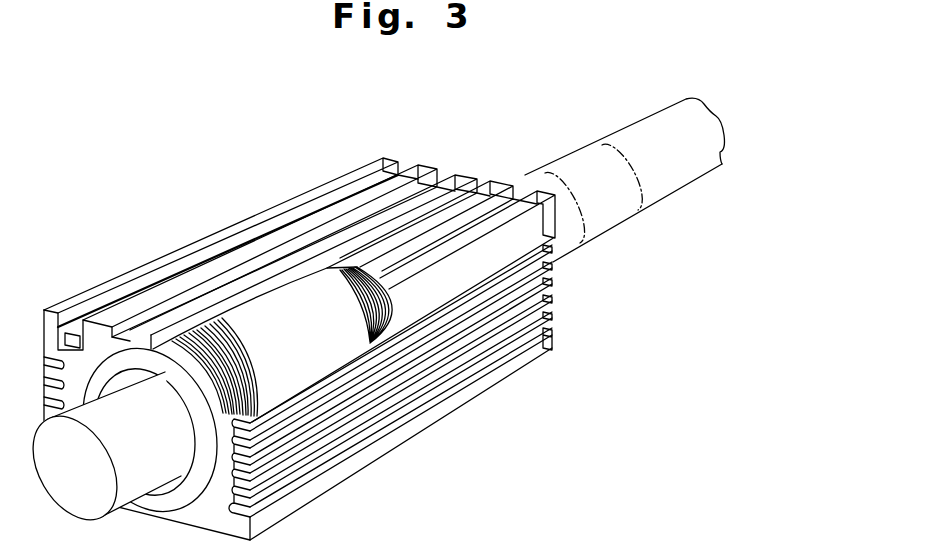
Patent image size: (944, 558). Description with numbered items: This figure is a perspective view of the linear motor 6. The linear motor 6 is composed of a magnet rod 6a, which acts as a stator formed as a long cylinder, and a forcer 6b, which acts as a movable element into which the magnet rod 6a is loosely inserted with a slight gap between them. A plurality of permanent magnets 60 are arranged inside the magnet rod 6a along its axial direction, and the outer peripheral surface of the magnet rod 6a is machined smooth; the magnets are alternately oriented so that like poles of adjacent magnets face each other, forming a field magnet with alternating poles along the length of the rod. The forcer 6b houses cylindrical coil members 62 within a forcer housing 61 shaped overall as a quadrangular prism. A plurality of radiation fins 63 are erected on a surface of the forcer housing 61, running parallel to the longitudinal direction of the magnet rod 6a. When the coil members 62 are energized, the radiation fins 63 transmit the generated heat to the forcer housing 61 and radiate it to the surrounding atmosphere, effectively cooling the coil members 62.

The linear motor 6 is at (250, 150).
The magnet rod 6a is at (648, 137).
The forcer 6b is at (340, 168).
The permanent magnet 60 is at (613, 222).
The forcer housing 61 is at (432, 173).
The coil member 62 is at (215, 337).
The radiation fin 63 is at (445, 355).